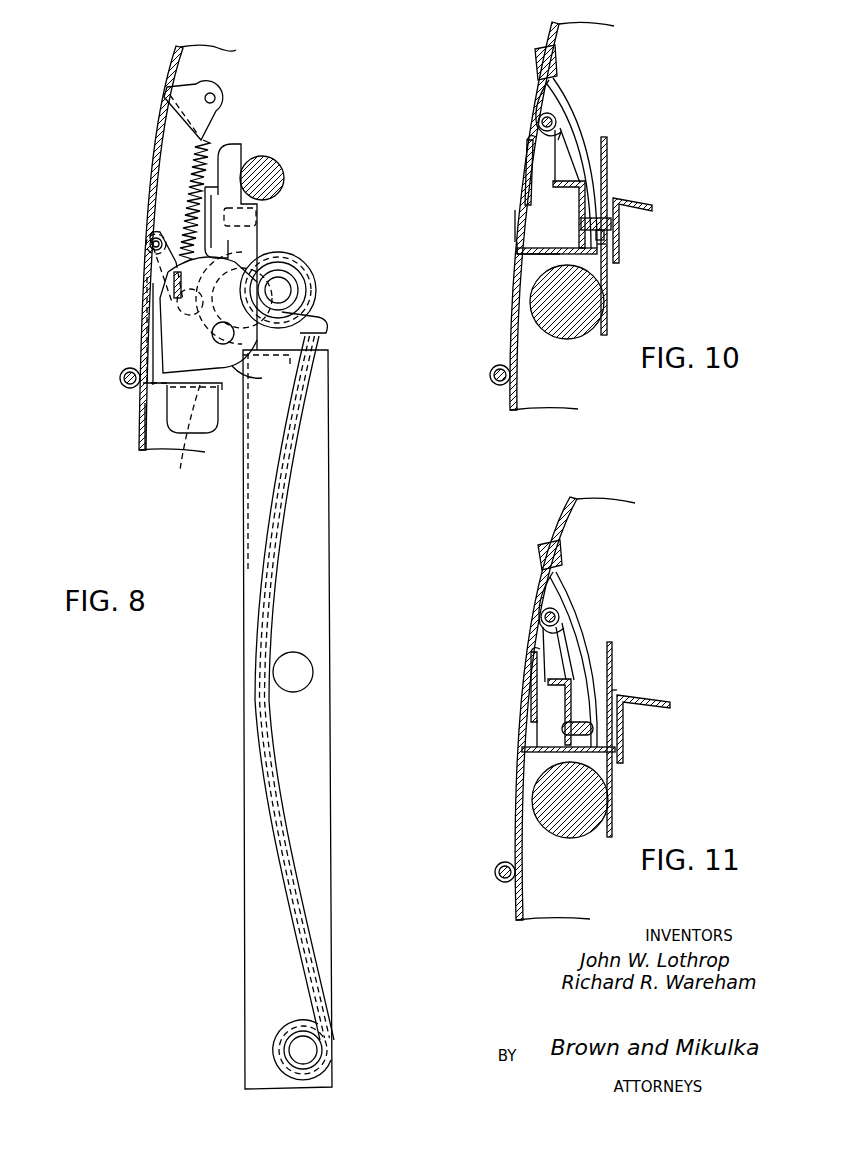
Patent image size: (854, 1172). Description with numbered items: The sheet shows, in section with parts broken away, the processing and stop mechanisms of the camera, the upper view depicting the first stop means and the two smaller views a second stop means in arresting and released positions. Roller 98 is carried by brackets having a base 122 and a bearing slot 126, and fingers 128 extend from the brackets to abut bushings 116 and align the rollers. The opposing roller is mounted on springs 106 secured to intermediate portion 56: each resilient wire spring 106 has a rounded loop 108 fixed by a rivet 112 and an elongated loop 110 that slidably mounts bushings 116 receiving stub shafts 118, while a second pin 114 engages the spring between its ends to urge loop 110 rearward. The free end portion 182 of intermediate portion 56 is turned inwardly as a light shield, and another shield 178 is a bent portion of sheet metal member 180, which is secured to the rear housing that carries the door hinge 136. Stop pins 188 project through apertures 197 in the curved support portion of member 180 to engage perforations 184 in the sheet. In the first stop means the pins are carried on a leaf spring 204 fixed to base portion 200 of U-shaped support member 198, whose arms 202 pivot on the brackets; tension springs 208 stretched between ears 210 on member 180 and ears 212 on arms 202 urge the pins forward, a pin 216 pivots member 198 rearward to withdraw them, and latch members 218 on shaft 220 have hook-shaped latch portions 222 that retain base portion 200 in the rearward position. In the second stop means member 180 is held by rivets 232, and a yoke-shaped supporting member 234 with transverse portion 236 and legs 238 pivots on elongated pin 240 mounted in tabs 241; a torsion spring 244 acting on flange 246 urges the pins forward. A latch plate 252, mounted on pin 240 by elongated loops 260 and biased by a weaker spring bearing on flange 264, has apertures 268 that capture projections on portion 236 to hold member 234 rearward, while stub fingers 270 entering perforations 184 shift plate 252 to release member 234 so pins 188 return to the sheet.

In FIG. 8, the intermediate portion 56 is at (243, 556).
In FIG. 10, the roller 98 is at (540, 308).
In FIG. 11, the roller 98 is at (540, 803).
In FIG. 8, the springs 106 is at (255, 772).
In FIG. 8, the rounded loop 108 is at (334, 1050).
In FIG. 8, the elongated loop 110 is at (300, 260).
In FIG. 8, the rivet 112 is at (298, 1050).
In FIG. 8, the second rivet or pin 114 is at (303, 668).
In FIG. 8, the bushings 116 is at (290, 292).
In FIG. 8, the stub shafts 118 is at (292, 282).
In FIG. 8, the base 122 is at (150, 358).
In FIG. 8, the bearing slot 126 is at (178, 303).
In FIG. 8, the fingers 128 is at (326, 330).
In FIG. 8, the hinge 136 is at (124, 380).
In FIG. 10, the hinge 136 is at (492, 376).
In FIG. 11, the hinge 136 is at (495, 872).
In FIG. 8, the light shield 178 is at (182, 466).
In FIG. 8, the sheet metal member 180 is at (172, 72).
In FIG. 10, the sheet metal member 180 is at (587, 142).
In FIG. 11, the sheet metal member 180 is at (588, 614).
In FIG. 8, the free end portion 182 is at (292, 362).
In FIG. 10, the perforations 184 is at (610, 250).
In FIG. 11, the perforations 184 is at (614, 770).
In FIG. 10, the stop pins 188 is at (612, 224).
In FIG. 10, the apertures 197 is at (606, 245).
In FIG. 11, the apertures 197 is at (617, 690).
In FIG. 8, the U-shaped support member 198 is at (259, 235).
In FIG. 8, the base portion 200 is at (203, 190).
In FIG. 8, the arms 202 is at (262, 378).
In FIG. 10, the leaf spring 204 is at (560, 246).
In FIG. 8, the coiled tension springs 208 is at (197, 145).
In FIG. 8, the ears 210 is at (200, 92).
In FIG. 8, the ears 212 is at (172, 300).
In FIG. 8, the pin 216 is at (282, 172).
In FIG. 8, the latch members 218 is at (148, 268).
In FIG. 8, the shaft 220 is at (150, 242).
In FIG. 8, the hook-shaped latch portion 222 is at (258, 215).
In FIG. 10, the rivets 232 is at (556, 65).
In FIG. 11, the rivets 232 is at (562, 562).
In FIG. 10, the yoke-shaped supporting member 234 is at (592, 215).
In FIG. 11, the yoke-shaped supporting member 234 is at (558, 699).
In FIG. 10, the transverse portion 236 is at (625, 200).
In FIG. 11, the transverse portion 236 is at (560, 727).
In FIG. 11, the legs 238 is at (568, 652).
In FIG. 10, the elongated pin 240 is at (541, 122).
In FIG. 11, the elongated pin 240 is at (543, 614).
In FIG. 10, the tabs 241 is at (562, 125).
In FIG. 10, the torsion spring 244 is at (584, 138).
In FIG. 10, the flange 246 is at (575, 185).
In FIG. 11, the flange 246 is at (545, 684).
In FIG. 10, the latch plate 252 is at (522, 215).
In FIG. 10, the elongated loops 260 is at (540, 100).
In FIG. 10, the flange 264 is at (528, 160).
In FIG. 10, the apertures 268 is at (541, 258).
In FIG. 11, the stub fingers 270 is at (617, 752).